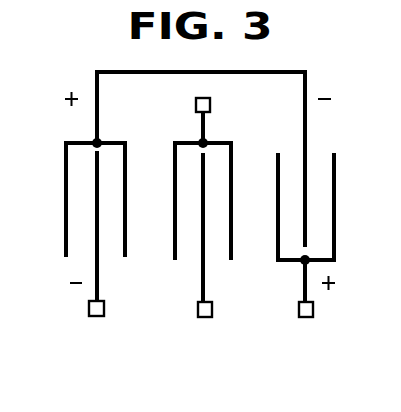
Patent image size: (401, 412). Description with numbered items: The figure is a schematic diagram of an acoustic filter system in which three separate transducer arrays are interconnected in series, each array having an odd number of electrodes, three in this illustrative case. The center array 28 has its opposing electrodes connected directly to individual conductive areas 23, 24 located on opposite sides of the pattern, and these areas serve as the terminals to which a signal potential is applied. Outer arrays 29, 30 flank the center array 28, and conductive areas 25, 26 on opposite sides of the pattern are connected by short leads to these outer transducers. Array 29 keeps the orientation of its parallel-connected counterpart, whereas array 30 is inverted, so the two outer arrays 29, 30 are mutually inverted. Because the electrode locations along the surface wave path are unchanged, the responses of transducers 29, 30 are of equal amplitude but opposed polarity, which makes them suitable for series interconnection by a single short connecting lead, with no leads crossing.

The conductive area 23 is at (210, 105).
The conductive area 24 is at (205, 317).
The conductive area 25 is at (97, 316).
The conductive area 26 is at (305, 317).
The array 28 is at (178, 131).
The outer array 29 is at (68, 131).
The outer array 30 is at (330, 130).